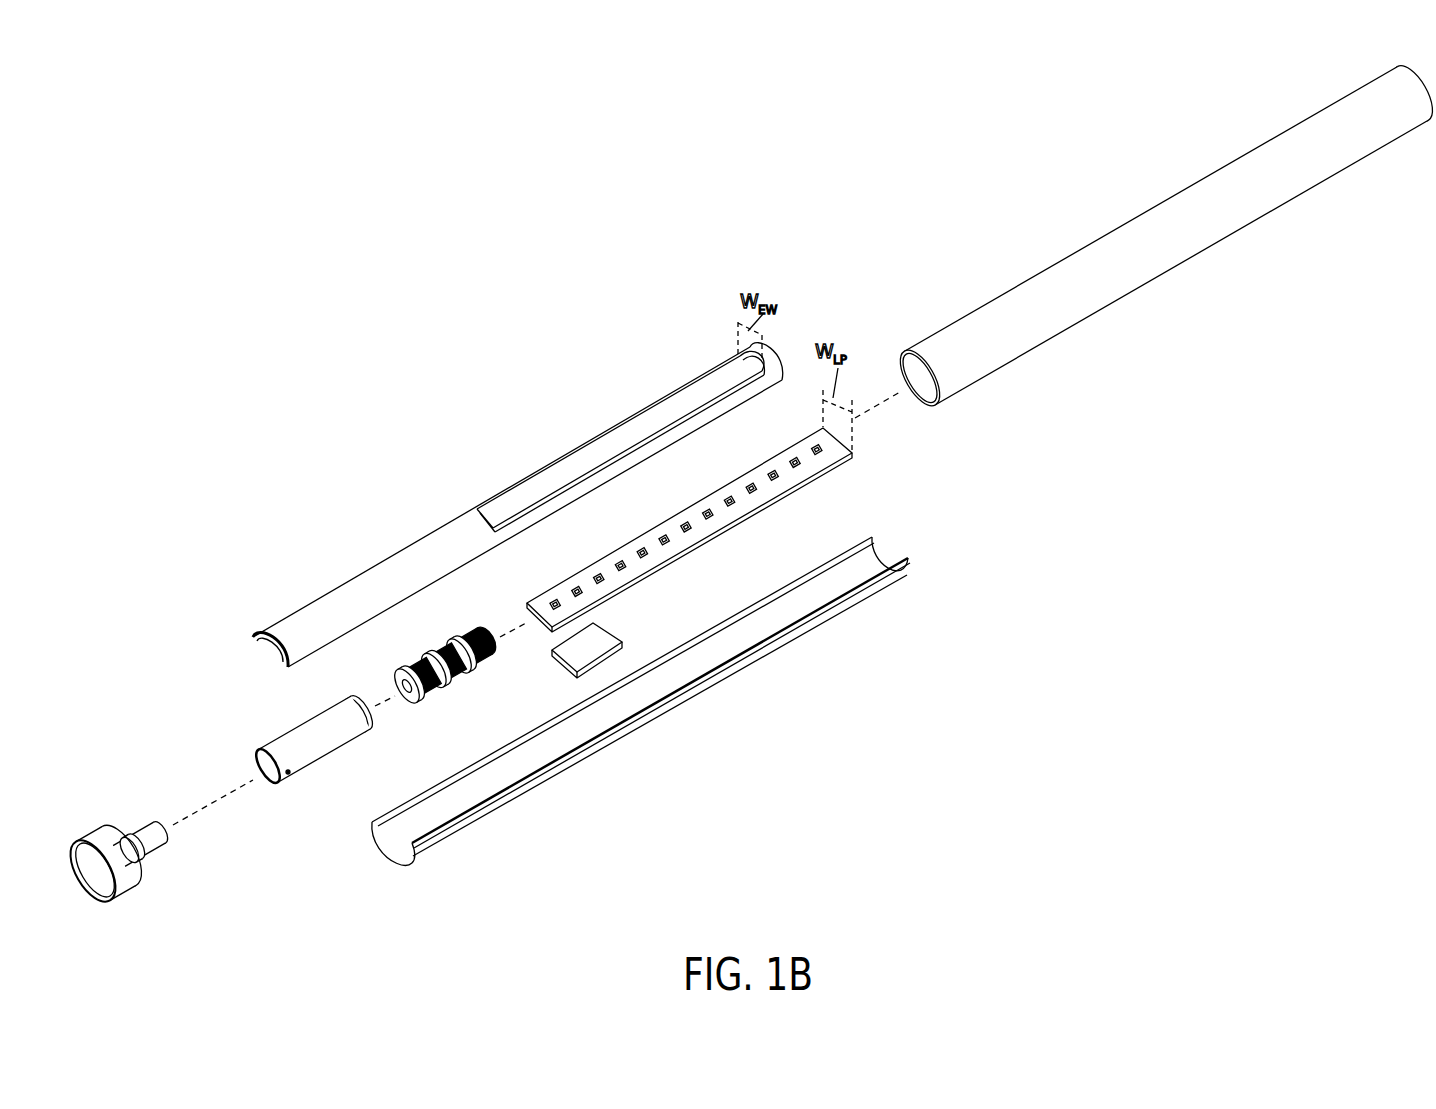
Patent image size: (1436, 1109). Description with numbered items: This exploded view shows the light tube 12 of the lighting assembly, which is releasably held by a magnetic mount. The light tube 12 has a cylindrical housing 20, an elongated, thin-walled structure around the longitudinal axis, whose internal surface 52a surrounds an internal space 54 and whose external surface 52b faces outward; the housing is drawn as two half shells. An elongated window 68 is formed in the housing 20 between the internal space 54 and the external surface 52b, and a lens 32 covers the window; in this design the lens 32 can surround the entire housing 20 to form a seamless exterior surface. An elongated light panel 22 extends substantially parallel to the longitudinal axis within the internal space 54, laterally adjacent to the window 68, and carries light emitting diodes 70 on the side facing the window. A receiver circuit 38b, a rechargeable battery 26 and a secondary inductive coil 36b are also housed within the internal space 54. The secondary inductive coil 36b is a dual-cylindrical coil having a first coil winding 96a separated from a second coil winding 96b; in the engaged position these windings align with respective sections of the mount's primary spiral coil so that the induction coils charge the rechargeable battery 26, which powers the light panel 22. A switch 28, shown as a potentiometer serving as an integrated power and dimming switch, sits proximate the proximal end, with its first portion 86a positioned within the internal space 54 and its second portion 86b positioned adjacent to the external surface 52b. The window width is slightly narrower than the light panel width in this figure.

The light tube 12 is at (771, 248).
The lens 32 is at (1034, 300).
The cylindrical housing 20 is at (548, 583).
The external surface 52b is at (467, 495).
The internal surface 52a is at (727, 648).
The internal space 54 is at (268, 652).
The elongated window 68 is at (688, 387).
The elongated light panel 22 is at (745, 496).
The light emitting diodes 70 is at (757, 490).
The receiver circuit 38b is at (595, 648).
The secondary inductive coil 36b is at (465, 688).
The first coil winding 96a is at (435, 685).
The second coil winding 96b is at (480, 660).
The rechargeable battery 26 is at (333, 728).
The switch 28 is at (152, 839).
The first portion 86a is at (148, 835).
The second portion 86b is at (102, 828).